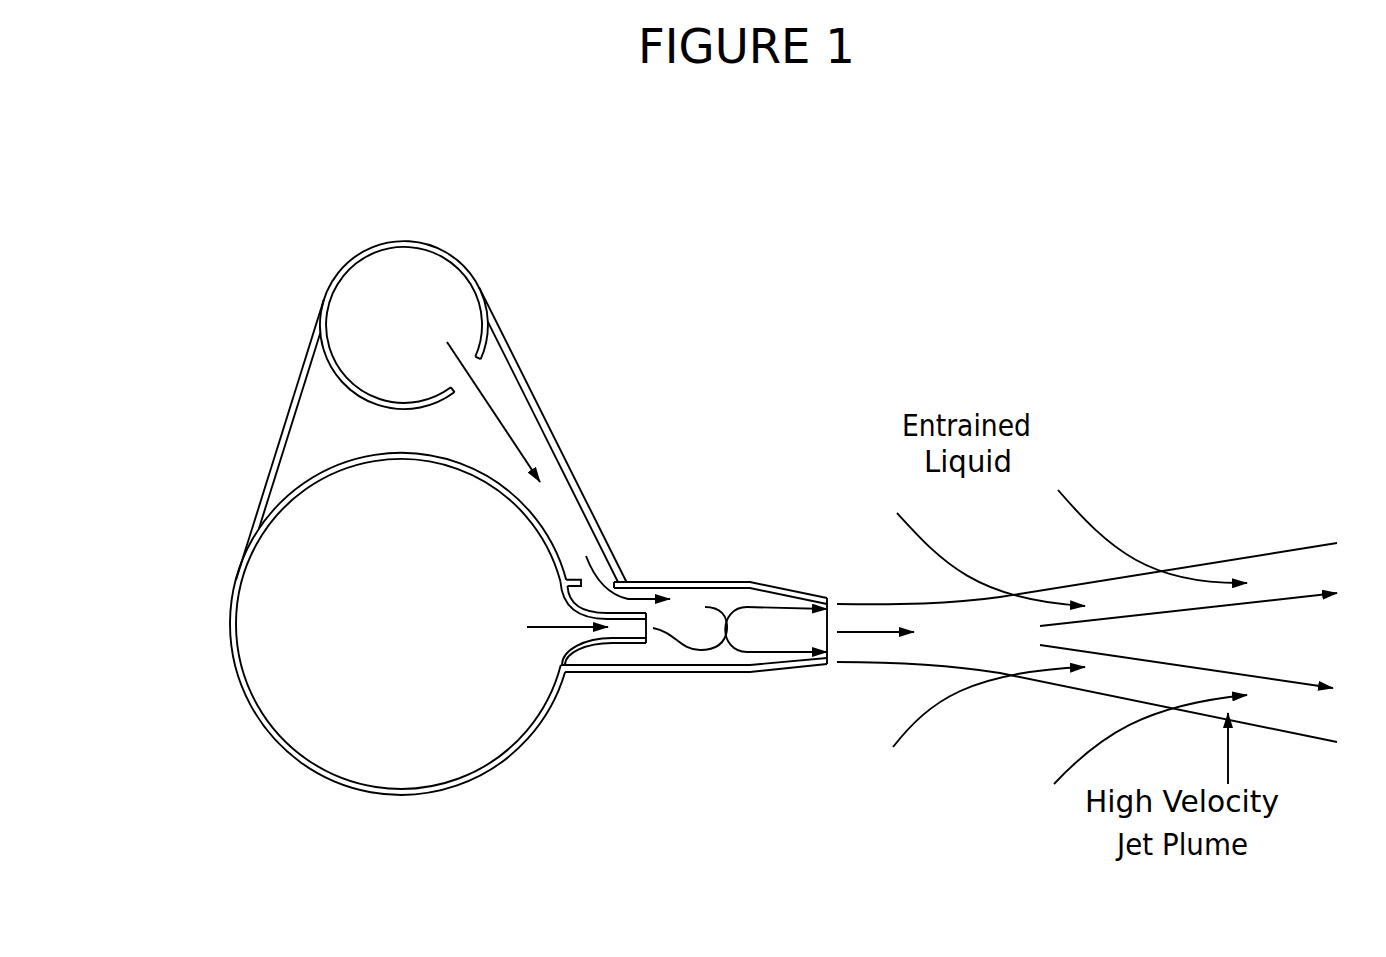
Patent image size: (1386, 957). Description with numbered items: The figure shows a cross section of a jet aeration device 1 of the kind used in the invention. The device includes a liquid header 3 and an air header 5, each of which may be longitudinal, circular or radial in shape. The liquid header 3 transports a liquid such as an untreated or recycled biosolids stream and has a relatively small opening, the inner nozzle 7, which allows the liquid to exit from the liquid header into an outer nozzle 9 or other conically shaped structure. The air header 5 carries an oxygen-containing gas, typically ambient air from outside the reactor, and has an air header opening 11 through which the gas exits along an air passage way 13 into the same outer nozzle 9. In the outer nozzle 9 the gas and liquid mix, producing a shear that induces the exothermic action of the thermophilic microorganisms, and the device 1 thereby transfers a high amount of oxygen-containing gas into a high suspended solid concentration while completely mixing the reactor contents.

The jet aeration device 1 is at (478, 531).
The liquid header 3 is at (227, 615).
The air header 5 is at (405, 240).
The inner nozzle 7 is at (620, 645).
The outer nozzle 9 is at (783, 674).
The air header opening 11 is at (477, 377).
The air passage way 13 is at (558, 502).